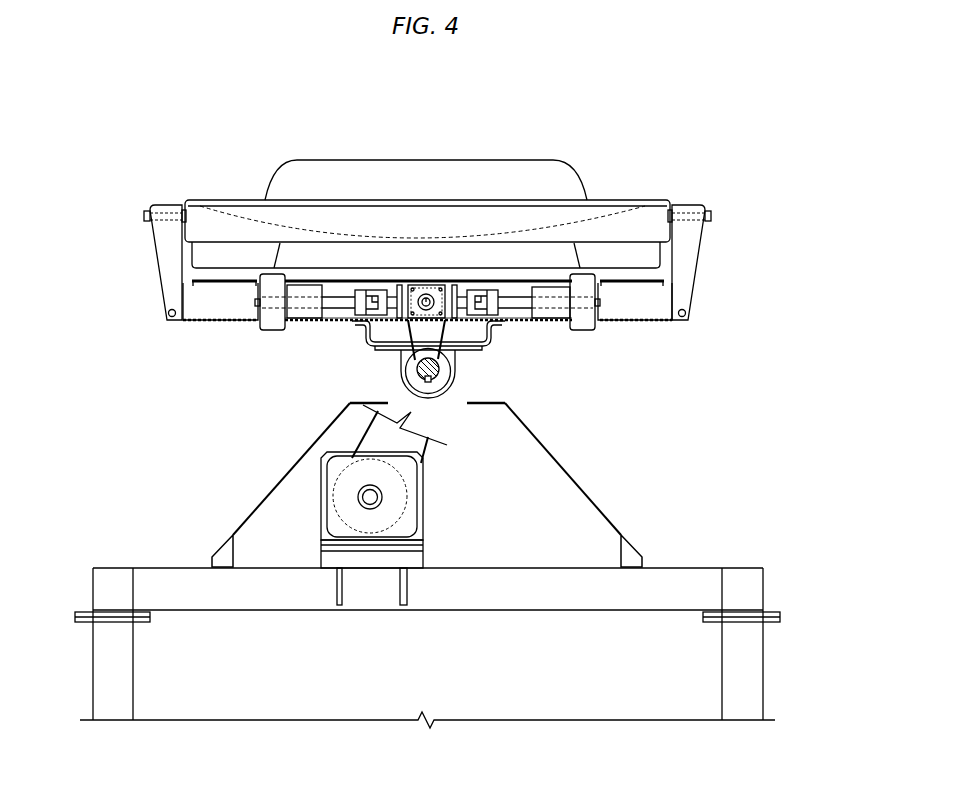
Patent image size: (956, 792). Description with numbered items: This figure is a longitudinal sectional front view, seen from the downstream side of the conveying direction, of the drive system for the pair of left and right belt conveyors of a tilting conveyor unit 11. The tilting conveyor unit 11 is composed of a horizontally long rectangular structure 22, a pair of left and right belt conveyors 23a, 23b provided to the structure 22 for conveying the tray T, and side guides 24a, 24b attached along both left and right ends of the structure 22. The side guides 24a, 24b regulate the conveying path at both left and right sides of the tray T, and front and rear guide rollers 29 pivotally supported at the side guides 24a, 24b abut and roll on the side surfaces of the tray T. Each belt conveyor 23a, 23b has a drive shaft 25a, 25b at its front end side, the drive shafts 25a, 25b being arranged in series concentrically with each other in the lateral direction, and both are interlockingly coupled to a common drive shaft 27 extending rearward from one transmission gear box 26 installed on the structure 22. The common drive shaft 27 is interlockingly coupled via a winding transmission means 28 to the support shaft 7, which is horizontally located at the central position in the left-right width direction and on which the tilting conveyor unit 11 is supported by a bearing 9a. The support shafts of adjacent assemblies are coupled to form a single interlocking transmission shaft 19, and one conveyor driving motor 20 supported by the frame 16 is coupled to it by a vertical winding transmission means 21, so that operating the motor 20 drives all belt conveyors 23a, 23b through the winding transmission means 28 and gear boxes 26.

The tray T is at (474, 220).
The tilting conveyor unit 11 is at (714, 218).
The side guide 24b is at (163, 262).
The side guide 24a is at (690, 260).
The guide roller 29 is at (168, 210).
The structure 22 is at (225, 278).
The belt conveyor 23b is at (272, 270).
The belt conveyor 23a is at (585, 270).
The drive shaft 25b is at (337, 297).
The drive shaft 25a is at (520, 297).
The transmission gear box 26 is at (439, 290).
The common drive shaft 27 is at (427, 298).
The winding transmission means 28 is at (459, 326).
The bearing 9a is at (455, 360).
The support shaft 7 is at (416, 369).
The interlocking transmission shaft 19 is at (437, 384).
The vertical winding transmission means 21 is at (352, 439).
The conveyor driving motor 20 is at (407, 518).
The frame 16 is at (490, 598).